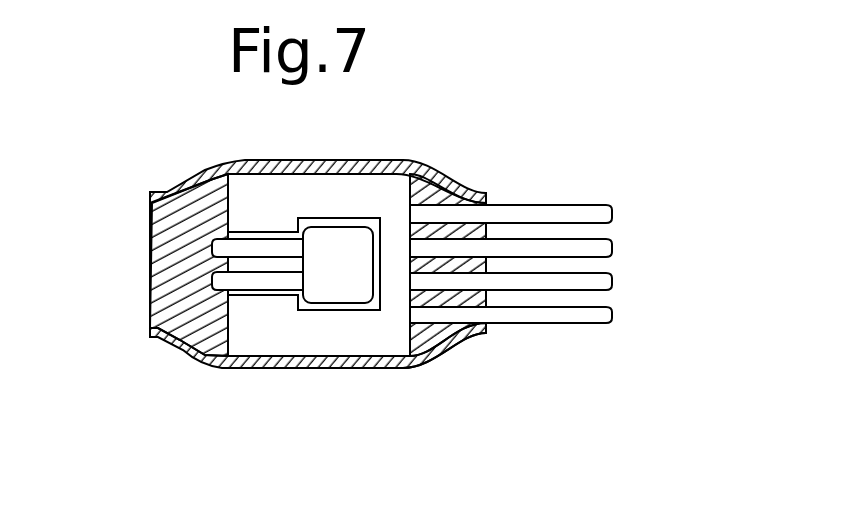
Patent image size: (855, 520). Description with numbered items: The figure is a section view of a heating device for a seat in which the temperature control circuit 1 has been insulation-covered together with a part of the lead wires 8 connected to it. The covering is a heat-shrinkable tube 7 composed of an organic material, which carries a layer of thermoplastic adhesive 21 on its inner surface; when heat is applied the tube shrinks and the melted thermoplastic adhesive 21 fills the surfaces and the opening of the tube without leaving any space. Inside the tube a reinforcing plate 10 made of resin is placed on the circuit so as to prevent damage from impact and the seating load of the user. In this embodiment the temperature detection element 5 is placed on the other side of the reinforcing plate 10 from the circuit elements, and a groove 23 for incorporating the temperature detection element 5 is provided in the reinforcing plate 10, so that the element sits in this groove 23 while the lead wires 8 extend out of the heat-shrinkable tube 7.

The temperature control circuit 1 is at (477, 163).
The temperature detection element 5 is at (323, 236).
The heat-shrinkable tube 7 is at (251, 370).
The lead wires 8 is at (212, 248).
The reinforcing plate 10 is at (378, 188).
The thermoplastic adhesive 21 is at (448, 343).
The groove 23 is at (350, 305).